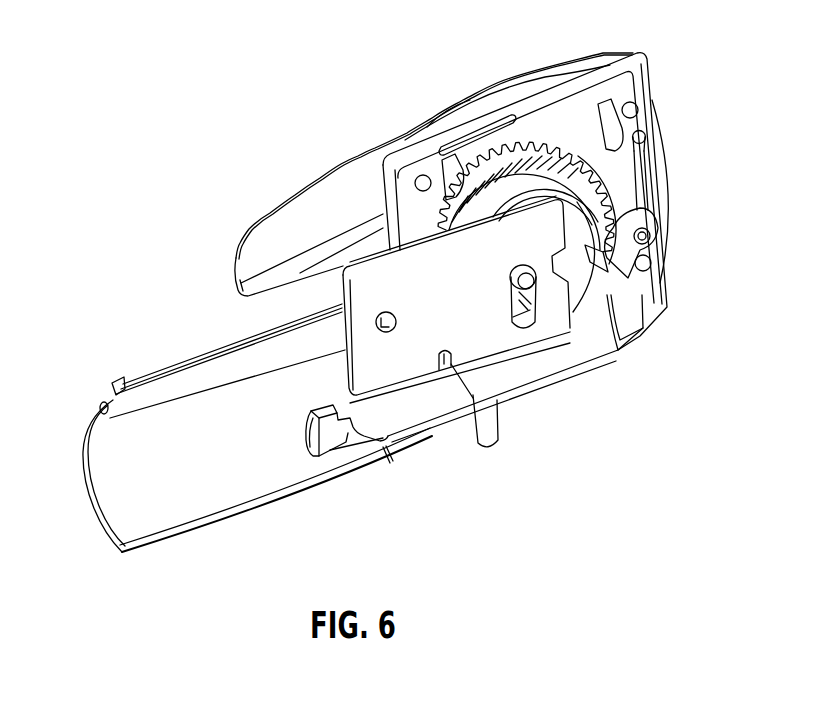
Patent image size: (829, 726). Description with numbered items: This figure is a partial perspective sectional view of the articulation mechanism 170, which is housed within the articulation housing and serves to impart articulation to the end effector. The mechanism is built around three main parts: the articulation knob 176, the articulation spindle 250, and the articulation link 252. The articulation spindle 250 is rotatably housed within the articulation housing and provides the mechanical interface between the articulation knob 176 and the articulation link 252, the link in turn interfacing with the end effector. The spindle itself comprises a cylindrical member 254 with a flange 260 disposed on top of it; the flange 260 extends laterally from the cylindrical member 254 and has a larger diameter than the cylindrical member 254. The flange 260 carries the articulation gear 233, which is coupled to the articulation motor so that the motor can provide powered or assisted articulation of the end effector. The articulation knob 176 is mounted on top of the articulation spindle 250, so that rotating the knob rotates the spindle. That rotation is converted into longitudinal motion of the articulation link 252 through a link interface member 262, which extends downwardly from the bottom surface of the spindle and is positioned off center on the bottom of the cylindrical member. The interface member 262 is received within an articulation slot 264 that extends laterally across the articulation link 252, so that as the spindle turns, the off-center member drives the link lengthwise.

The articulation mechanism 170 is at (398, 97).
The articulation knob 176 is at (338, 162).
The articulation gear 233 is at (543, 150).
The articulation spindle 250 is at (573, 311).
The articulation link 252 is at (422, 423).
The cylindrical member 254 is at (650, 238).
The flange 260 is at (642, 214).
The link interface member 262 is at (535, 284).
The articulation slot 264 is at (536, 300).